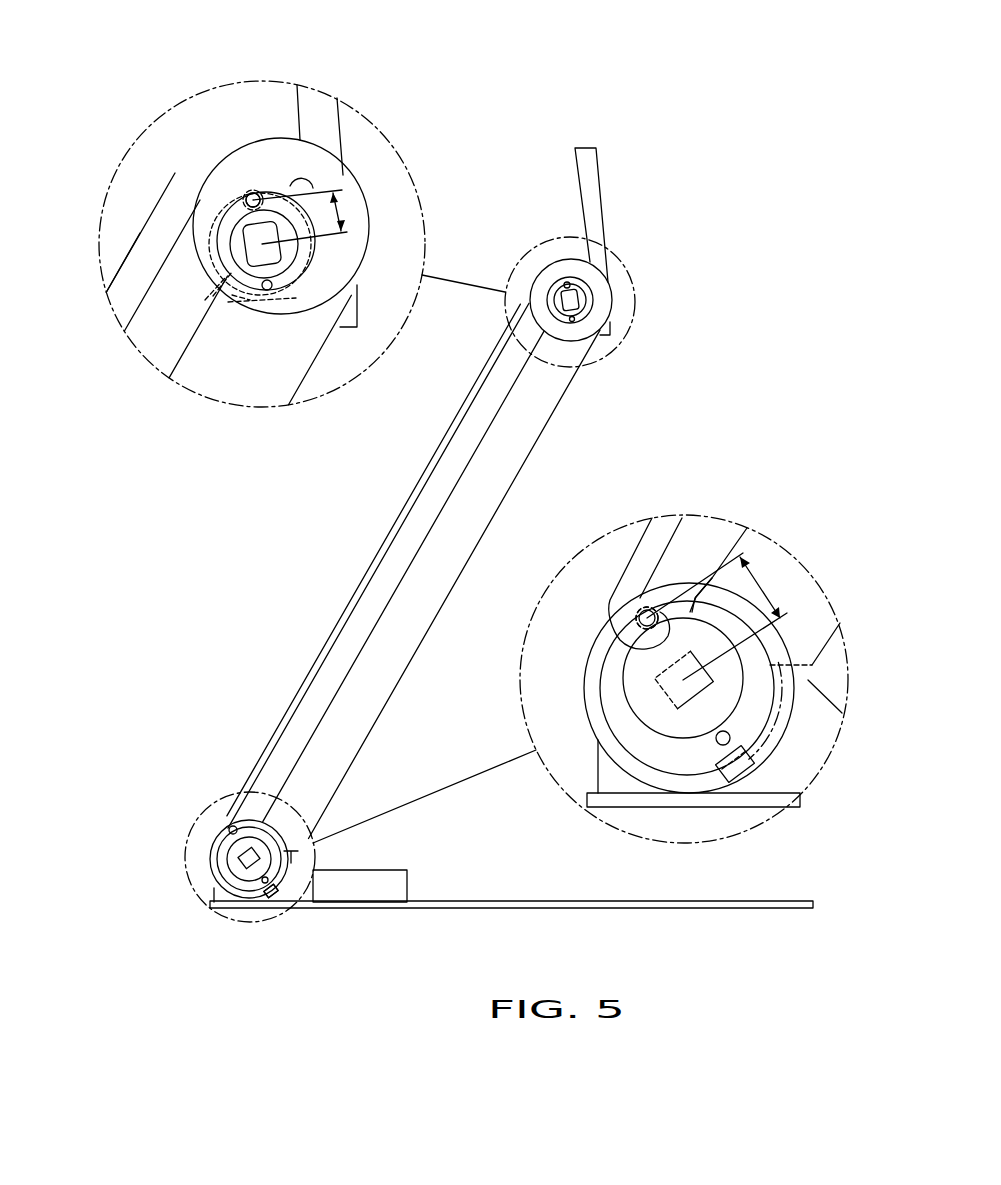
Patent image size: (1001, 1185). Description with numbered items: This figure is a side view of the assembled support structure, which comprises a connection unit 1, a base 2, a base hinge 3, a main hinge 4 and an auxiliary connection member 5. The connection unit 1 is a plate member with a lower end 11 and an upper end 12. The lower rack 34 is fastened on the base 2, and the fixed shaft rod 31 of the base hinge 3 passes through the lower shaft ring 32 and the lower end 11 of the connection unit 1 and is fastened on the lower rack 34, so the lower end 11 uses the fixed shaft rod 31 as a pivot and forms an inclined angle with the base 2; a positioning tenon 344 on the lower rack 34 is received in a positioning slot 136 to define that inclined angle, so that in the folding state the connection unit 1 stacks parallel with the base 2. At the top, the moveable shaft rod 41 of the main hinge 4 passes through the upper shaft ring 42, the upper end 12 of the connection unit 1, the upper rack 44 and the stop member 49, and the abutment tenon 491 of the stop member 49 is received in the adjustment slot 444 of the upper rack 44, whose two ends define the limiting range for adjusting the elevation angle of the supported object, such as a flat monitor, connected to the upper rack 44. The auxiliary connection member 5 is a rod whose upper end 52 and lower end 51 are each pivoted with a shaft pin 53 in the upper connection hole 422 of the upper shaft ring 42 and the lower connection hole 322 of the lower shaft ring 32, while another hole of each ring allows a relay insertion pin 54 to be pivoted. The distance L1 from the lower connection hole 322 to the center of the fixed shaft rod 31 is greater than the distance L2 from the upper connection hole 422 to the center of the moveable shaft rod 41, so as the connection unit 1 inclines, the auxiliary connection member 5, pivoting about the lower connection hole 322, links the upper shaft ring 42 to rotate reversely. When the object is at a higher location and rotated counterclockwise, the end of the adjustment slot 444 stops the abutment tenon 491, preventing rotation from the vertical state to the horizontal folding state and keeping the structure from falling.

The connection unit 1 is at (520, 425).
The base 2 is at (438, 906).
The base hinge 3 is at (208, 837).
The main hinge 4 is at (545, 218).
The auxiliary connection member 5 is at (160, 320).
The lower end 11 is at (240, 752).
The upper end 12 is at (490, 337).
The fixed shaft rod 31 is at (630, 678).
The lower shaft ring 32 is at (220, 858).
The lower rack 34 is at (357, 887).
The moveable shaft rod 41 is at (548, 296).
The upper shaft ring 42 is at (597, 294).
The upper rack 44 is at (587, 167).
The stop member 49 is at (597, 312).
The lower end 51 is at (650, 592).
The upper end 52 is at (247, 193).
The shaft pin 53 is at (245, 200).
The relay insertion pin 54 is at (275, 290).
The positioning slot 136 is at (300, 860).
The lower connection hole 322 is at (638, 618).
The positioning tenon 344 is at (275, 888).
The upper connection hole 422 is at (256, 190).
The adjustment slot 444 is at (158, 357).
The abutment tenon 491 is at (232, 295).
The distance L1 is at (722, 616).
The distance L2 is at (300, 203).